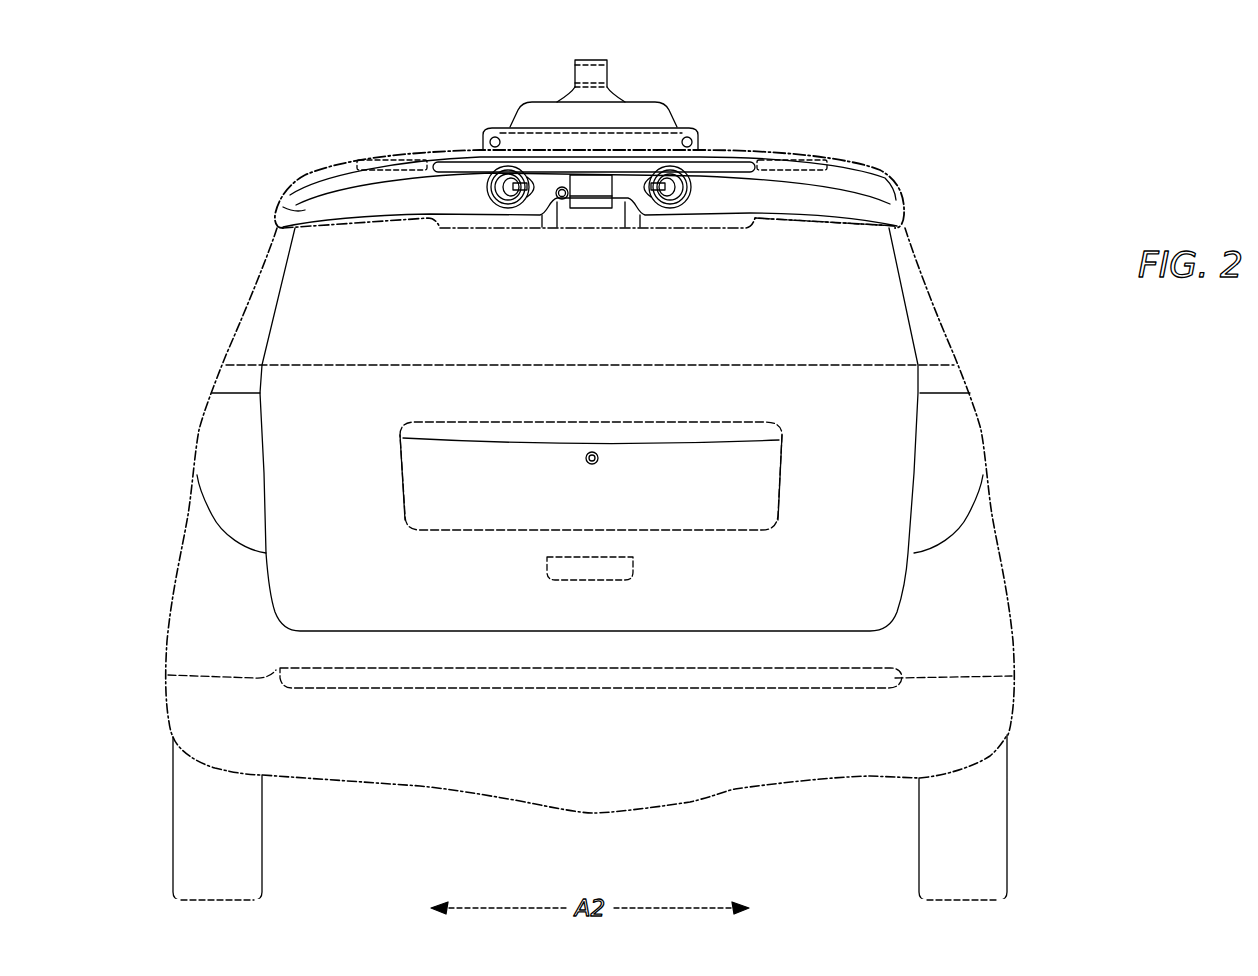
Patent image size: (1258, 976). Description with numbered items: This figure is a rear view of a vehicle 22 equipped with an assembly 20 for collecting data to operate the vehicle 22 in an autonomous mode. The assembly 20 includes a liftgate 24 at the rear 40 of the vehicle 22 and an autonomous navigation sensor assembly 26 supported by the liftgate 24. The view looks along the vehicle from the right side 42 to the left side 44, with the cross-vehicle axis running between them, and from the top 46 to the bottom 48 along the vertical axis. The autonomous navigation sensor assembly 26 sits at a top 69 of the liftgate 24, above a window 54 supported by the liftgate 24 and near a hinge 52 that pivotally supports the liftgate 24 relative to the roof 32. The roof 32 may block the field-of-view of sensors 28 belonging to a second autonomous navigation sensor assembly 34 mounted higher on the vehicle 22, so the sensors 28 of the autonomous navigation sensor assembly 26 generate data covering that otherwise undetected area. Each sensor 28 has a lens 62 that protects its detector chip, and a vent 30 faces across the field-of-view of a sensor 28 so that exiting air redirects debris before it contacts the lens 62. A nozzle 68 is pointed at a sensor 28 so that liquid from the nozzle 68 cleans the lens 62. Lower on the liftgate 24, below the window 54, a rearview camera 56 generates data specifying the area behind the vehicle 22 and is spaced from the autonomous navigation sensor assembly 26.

The assembly 20 is at (940, 207).
The vehicle 22 is at (956, 355).
The liftgate 24 is at (867, 453).
The autonomous navigation sensor assembly 26 is at (300, 210).
The sensors 28 is at (610, 72).
The vent 30 is at (497, 197).
The roof 32 is at (462, 150).
The second autonomous navigation sensor assembly 34 is at (542, 102).
The rear 40 is at (346, 494).
The right side 42 is at (1010, 605).
The left side 44 is at (168, 605).
The top 46 is at (724, 152).
The bottom 48 is at (847, 781).
The hinge 52 is at (373, 152).
The window 54 is at (310, 305).
The rearview camera 56 is at (586, 460).
The lens 62 is at (505, 200).
The nozzle 68 is at (516, 185).
The top of the liftgate 69 is at (892, 180).